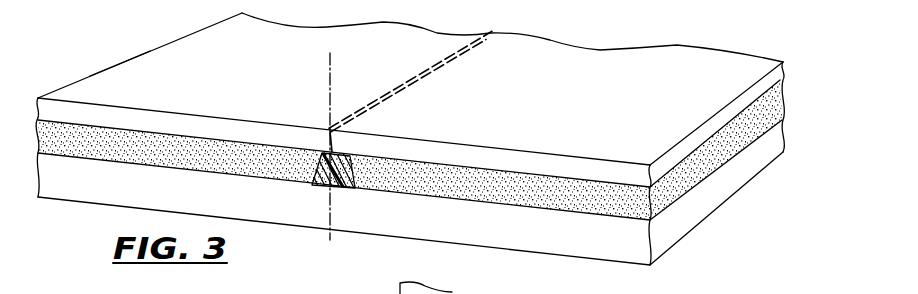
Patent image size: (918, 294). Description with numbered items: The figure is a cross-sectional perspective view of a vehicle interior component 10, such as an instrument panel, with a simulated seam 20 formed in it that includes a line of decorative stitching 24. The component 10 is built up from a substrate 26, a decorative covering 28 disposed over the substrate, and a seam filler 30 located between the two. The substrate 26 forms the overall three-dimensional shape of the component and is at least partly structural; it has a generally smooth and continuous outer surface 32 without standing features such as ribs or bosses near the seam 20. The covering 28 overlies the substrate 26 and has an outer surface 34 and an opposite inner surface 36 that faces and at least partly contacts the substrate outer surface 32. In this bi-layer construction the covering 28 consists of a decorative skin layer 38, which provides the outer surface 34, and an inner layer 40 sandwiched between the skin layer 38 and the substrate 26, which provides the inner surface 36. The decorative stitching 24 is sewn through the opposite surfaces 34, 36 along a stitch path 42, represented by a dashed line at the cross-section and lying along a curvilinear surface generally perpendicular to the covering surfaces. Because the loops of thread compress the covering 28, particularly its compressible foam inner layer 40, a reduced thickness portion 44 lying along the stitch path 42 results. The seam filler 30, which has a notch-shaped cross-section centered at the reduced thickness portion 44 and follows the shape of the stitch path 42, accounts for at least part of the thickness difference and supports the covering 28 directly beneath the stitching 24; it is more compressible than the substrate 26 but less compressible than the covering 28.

The vehicle interior component 10 is at (720, 42).
The simulated seam 20 is at (447, 61).
The decorative stitching 24 is at (410, 83).
The substrate 26 is at (82, 183).
The decorative covering 28 is at (140, 72).
The seam filler 30 is at (330, 163).
The outer surface 32 is at (73, 158).
The outer surface 34 is at (200, 49).
The inner surface 36 is at (97, 158).
The decorative skin layer 38 is at (593, 172).
The inner layer 40 is at (623, 203).
The stitch path 42 is at (328, 90).
The reduced thickness portion 44 is at (338, 150).